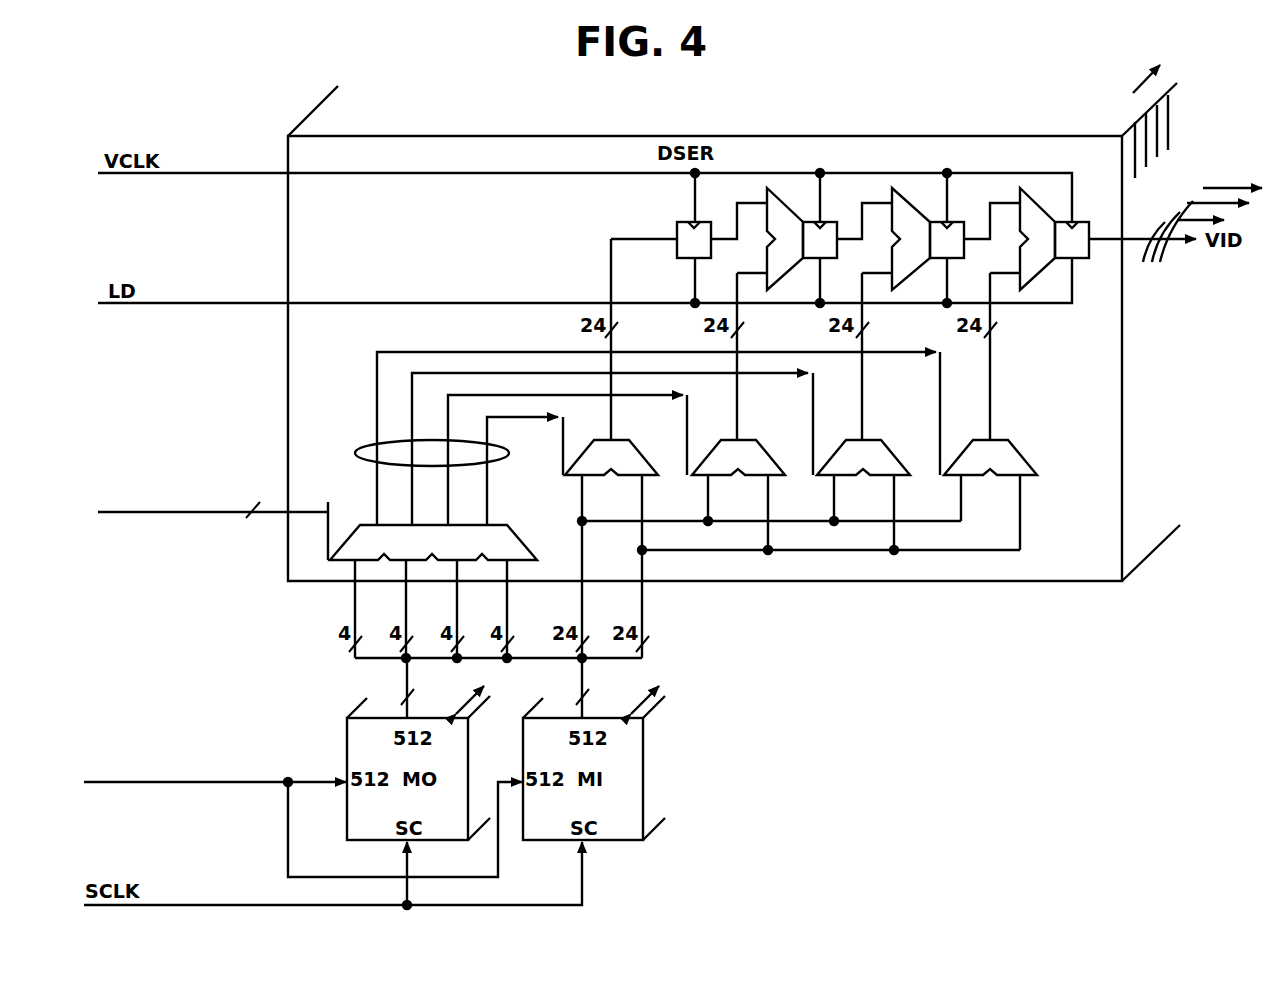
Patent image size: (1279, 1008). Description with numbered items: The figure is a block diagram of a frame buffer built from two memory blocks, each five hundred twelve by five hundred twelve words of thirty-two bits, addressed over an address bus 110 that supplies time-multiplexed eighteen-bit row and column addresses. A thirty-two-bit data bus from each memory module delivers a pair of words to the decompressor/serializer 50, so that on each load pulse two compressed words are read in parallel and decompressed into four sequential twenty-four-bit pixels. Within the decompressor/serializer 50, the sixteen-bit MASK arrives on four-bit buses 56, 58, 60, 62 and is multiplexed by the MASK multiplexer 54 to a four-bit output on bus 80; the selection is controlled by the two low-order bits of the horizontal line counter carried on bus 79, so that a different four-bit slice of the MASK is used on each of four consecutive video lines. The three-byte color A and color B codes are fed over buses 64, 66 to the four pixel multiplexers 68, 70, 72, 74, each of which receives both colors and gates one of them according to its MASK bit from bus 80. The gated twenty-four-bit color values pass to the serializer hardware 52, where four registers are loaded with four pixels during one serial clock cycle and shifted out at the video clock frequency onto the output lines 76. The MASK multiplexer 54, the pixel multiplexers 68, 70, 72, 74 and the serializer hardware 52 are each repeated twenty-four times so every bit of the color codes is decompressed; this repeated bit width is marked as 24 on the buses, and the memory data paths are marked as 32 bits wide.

The decompressor/serializer 50 is at (825, 582).
The serializer hardware 52 is at (846, 192).
The 24-bit video data bus 24 is at (1090, 134).
The output lines 76 is at (1199, 238).
The bus 80 is at (362, 453).
The MASK multiplexer 54 is at (522, 540).
The bus 79 is at (178, 513).
The pixel multiplexer 68 is at (592, 477).
The pixel multiplexer 70 is at (718, 477).
The pixel multiplexer 72 is at (843, 477).
The pixel multiplexer 74 is at (970, 477).
The 4-bit bus 56 is at (352, 601).
The 4-bit bus 58 is at (404, 601).
The 4-bit bus 60 is at (455, 601).
The 4-bit bus 62 is at (505, 601).
The bus 64 is at (578, 601).
The bus 66 is at (638, 601).
The 32-bit memory data bus 32 is at (645, 702).
The address bus 110 is at (245, 780).